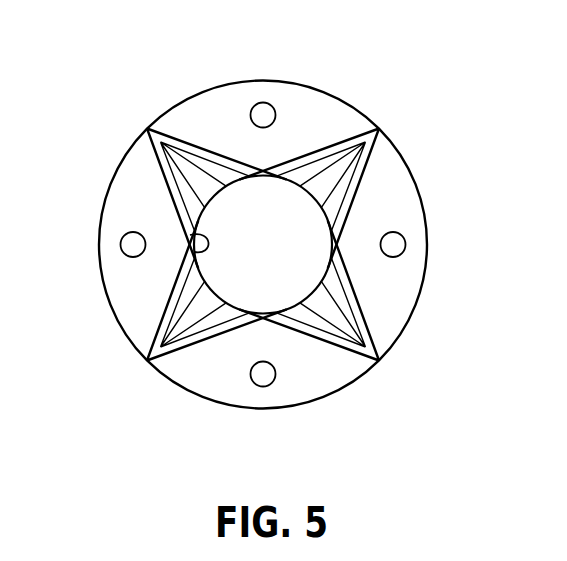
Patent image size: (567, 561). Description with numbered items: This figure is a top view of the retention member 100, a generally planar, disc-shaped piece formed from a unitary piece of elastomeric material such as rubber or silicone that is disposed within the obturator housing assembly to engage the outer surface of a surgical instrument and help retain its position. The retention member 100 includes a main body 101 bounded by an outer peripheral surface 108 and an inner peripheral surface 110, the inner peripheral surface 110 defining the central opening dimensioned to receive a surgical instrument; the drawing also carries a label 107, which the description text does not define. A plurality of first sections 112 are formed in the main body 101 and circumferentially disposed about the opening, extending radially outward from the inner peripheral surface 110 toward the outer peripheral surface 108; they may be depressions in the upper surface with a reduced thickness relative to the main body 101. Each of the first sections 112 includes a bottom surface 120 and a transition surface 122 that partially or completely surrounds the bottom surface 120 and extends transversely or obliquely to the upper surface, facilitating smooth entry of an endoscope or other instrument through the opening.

The retention member 100 is at (379, 77).
The main body 101 is at (202, 112).
The central opening 107 is at (308, 258).
The outer peripheral surface 108 is at (416, 313).
The inner peripheral surface 110 is at (193, 236).
The first sections 112 is at (368, 167).
The bottom surface 120 is at (197, 310).
The transition surface 122 is at (177, 307).